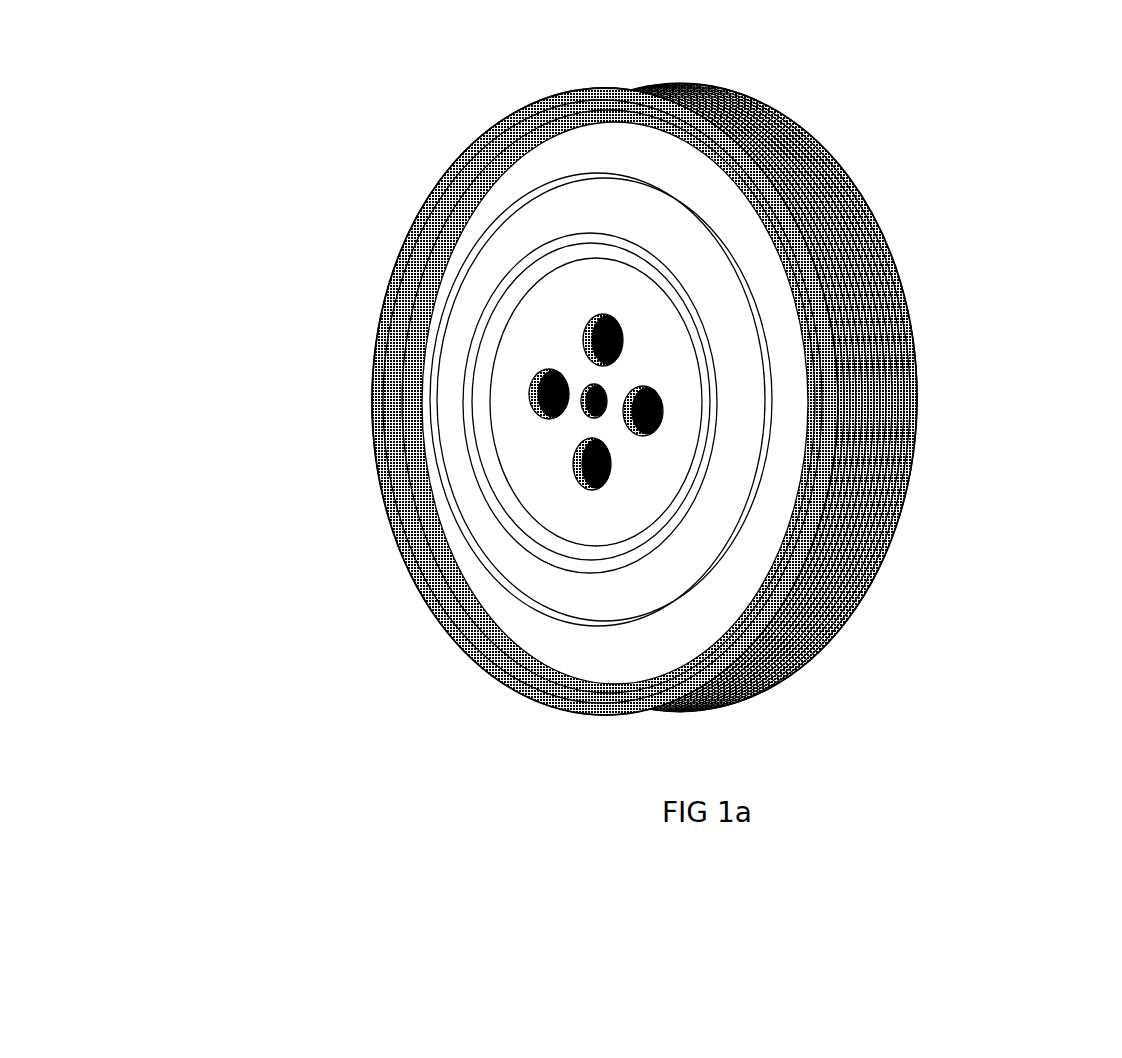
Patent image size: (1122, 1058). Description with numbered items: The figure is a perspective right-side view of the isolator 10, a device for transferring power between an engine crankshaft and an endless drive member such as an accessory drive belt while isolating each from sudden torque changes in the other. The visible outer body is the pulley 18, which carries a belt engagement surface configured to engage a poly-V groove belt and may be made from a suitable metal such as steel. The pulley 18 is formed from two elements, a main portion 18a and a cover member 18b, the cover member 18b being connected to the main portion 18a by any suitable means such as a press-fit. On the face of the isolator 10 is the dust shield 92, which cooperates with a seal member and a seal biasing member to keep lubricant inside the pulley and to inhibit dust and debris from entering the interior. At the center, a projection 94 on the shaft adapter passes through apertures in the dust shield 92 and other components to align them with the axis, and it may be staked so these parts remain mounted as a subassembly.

The isolator 10 is at (672, 398).
The pulley 18 is at (747, 400).
The main portion 18a is at (883, 458).
The cover member 18b is at (778, 522).
The dust shield 92 is at (665, 355).
The projection 94 is at (592, 396).